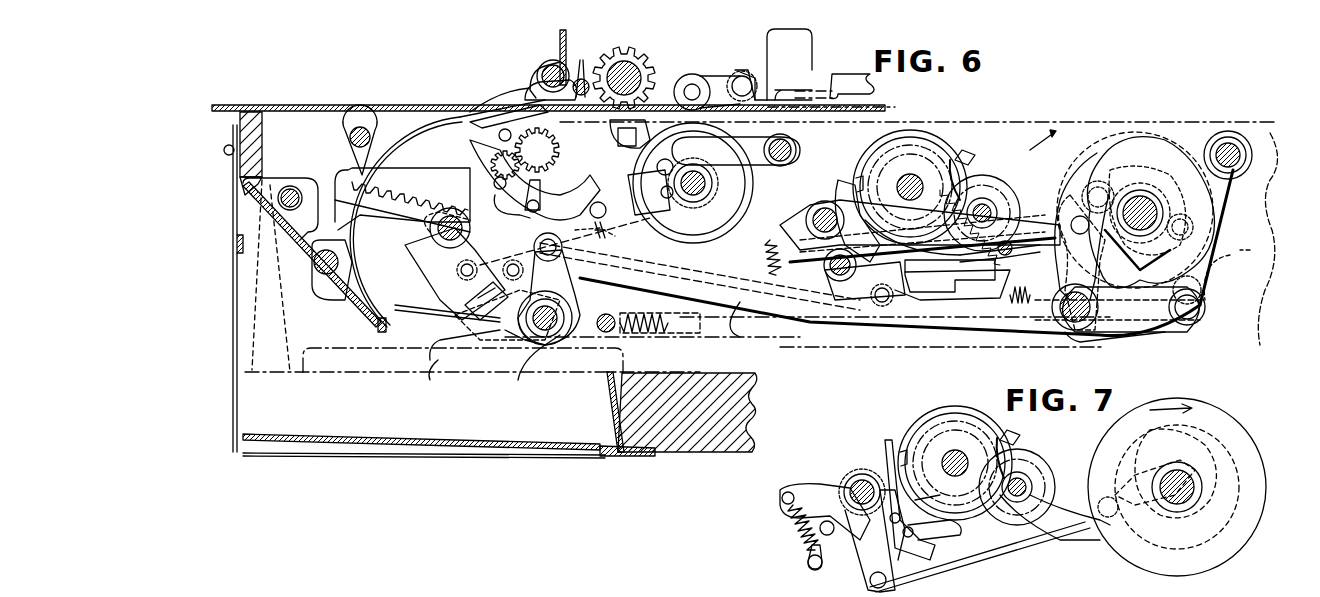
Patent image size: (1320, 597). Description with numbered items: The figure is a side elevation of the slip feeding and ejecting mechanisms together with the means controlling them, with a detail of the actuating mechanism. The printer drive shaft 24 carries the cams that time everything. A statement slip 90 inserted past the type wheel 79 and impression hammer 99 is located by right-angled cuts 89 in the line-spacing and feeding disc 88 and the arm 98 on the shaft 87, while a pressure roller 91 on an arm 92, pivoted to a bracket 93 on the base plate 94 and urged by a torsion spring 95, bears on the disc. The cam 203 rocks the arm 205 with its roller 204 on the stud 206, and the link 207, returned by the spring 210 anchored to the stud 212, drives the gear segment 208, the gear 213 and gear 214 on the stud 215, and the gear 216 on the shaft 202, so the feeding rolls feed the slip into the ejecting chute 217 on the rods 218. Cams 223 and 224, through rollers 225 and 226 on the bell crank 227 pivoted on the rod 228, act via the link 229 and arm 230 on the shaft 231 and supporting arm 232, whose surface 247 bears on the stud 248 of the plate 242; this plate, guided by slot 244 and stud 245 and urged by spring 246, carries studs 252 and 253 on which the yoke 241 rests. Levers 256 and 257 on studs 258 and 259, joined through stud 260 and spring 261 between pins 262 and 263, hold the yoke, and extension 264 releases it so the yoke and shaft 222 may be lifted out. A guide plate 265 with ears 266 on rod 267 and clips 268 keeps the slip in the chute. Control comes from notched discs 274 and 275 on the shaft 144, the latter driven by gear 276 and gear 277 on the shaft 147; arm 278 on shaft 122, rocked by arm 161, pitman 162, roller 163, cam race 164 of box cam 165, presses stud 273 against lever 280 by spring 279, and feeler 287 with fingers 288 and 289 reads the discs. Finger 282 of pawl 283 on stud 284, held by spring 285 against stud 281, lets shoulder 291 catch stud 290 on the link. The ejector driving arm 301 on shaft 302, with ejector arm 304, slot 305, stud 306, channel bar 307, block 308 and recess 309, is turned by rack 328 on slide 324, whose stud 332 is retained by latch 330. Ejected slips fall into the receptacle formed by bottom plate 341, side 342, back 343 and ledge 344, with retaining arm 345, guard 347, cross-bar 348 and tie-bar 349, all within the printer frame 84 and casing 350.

In FIG. 6, the casing 350 is at (290, 105).
In FIG. 6, the cross-bar 348 is at (250, 120).
In FIG. 6, the retaining arm 345 is at (233, 292).
In FIG. 6, the tie-bar 349 is at (244, 250).
In FIG. 6, the side 342 is at (255, 187).
In FIG. 6, the guard 347 is at (258, 210).
In FIG. 6, the bottom plate 341 is at (380, 434).
In FIG. 6, the ledge 344 is at (622, 458).
In FIG. 6, the back 343 is at (608, 398).
In FIG. 6, the base plate 94 is at (750, 392).
In FIG. 6, the bracket 93 is at (800, 42).
In FIG. 6, the torsion spring 95 is at (790, 62).
In FIG. 6, the pressure roller 91 is at (702, 70).
In FIG. 6, the arm 92 is at (728, 80).
In FIG. 6, the statement slip 90 is at (676, 85).
In FIG. 6, the type wheel 79 is at (690, 75).
In FIG. 6, the rod 267 is at (605, 52).
In FIG. 6, the ear 266 is at (575, 58).
In FIG. 6, the shaft 222 is at (560, 52).
In FIG. 6, the clip 268 is at (550, 68).
In FIG. 6, the guide plate 265 is at (535, 60).
In FIG. 6, the shaft 202 is at (535, 86).
In FIG. 6, the yoke 241 is at (535, 85).
In FIG. 6, the gear 216 is at (510, 110).
In FIG. 6, the gear 214 is at (468, 112).
In FIG. 6, the extension 264 is at (468, 105).
In FIG. 6, the ejecting chute 217 is at (398, 140).
In FIG. 6, the rod 218 is at (350, 135).
In FIG. 6, the rack 328 is at (348, 174).
In FIG. 6, the pin 262 is at (475, 178).
In FIG. 6, the gear 213 is at (498, 136).
In FIG. 6, the stud 215 is at (490, 158).
In FIG. 6, the shaft 302 is at (438, 222).
In FIG. 6, the ejector arm 304 is at (400, 262).
In FIG. 6, the stud 306 is at (463, 278).
In FIG. 6, the slot 305 is at (467, 305).
In FIG. 6, the channel bar 307 is at (470, 326).
In FIG. 6, the ejector driving arm 301 is at (420, 314).
In FIG. 6, the gear segment 208 is at (378, 330).
In FIG. 6, the ejecting block 308 is at (433, 355).
In FIG. 6, the recess 309 is at (442, 375).
In FIG. 6, the supporting arm 232 is at (520, 340).
In FIG. 6, the shaft 231 is at (518, 376).
In FIG. 6, the arm 230 is at (580, 302).
In FIG. 6, the plate 242 is at (562, 246).
In FIG. 6, the surface 247 is at (500, 282).
In FIG. 6, the slot 244 is at (535, 195).
In FIG. 6, the stud 245 is at (539, 210).
In FIG. 6, the stud 258 is at (511, 187).
In FIG. 6, the lever 256 is at (512, 204).
In FIG. 6, the stud 252 is at (535, 180).
In FIG. 6, the stud 259 is at (596, 195).
In FIG. 6, the lever 257 is at (614, 219).
In FIG. 6, the stud 260 is at (609, 232).
In FIG. 6, the stud 248 is at (612, 258).
In FIG. 6, the spring 261 is at (623, 134).
In FIG. 6, the spring 246 is at (693, 183).
In FIG. 6, the shaft 87 is at (713, 184).
In FIG. 6, the impression hammer 99 is at (705, 184).
In FIG. 6, the pin 263 is at (653, 192).
In FIG. 6, the stud 253 is at (677, 160).
In FIG. 6, the right-angled cut 89 is at (705, 148).
In FIG. 6, the arm 98 is at (772, 155).
In FIG. 6, the line-spacing and feeding disc 88 is at (798, 152).
In FIG. 6, the shaft 122 is at (822, 206).
In FIG. 7, the shaft 122 is at (862, 478).
In FIG. 6, the lever 280 is at (800, 222).
In FIG. 7, the lever 280 is at (822, 486).
In FIG. 6, the stud 281 is at (922, 262).
In FIG. 7, the stud 281 is at (985, 548).
In FIG. 6, the spring 279 is at (765, 255).
In FIG. 7, the spring 279 is at (795, 520).
In FIG. 6, the finger 288 is at (845, 185).
In FIG. 7, the finger 288 is at (888, 470).
In FIG. 6, the notched disc 274 is at (930, 132).
In FIG. 7, the notched disc 274 is at (925, 412).
In FIG. 6, the shaft 144 is at (906, 178).
In FIG. 7, the shaft 144 is at (949, 452).
In FIG. 6, the finger 282 is at (935, 208).
In FIG. 6, the gear 276 is at (962, 150).
In FIG. 7, the gear 276 is at (1010, 440).
In FIG. 6, the notched disc 275 is at (963, 160).
In FIG. 7, the notched disc 275 is at (1000, 440).
In FIG. 6, the gear 277 is at (986, 185).
In FIG. 7, the gear 277 is at (1040, 465).
In FIG. 6, the shaft 147 is at (992, 210).
In FIG. 7, the shaft 147 is at (1027, 485).
In FIG. 6, the printer frame 84 is at (1020, 122).
In FIG. 6, the link 229 is at (1030, 248).
In FIG. 6, the cam 203 is at (1080, 185).
In FIG. 6, the roller 226 is at (1085, 185).
In FIG. 6, the cam 224 is at (1168, 140).
In FIG. 6, the printer drive shaft 24 is at (1145, 200).
In FIG. 7, the printer drive shaft 24 is at (1188, 500).
In FIG. 6, the cam 223 is at (1205, 228).
In FIG. 6, the stud 206 is at (1235, 140).
In FIG. 6, the arm 205 is at (1240, 190).
In FIG. 6, the roller 204 is at (1252, 250).
In FIG. 6, the roller 225 is at (1205, 292).
In FIG. 6, the rod 228 is at (1090, 298).
In FIG. 6, the link 207 is at (1165, 332).
In FIG. 6, the bell crank 227 is at (1118, 325).
In FIG. 6, the spring 210 is at (668, 333).
In FIG. 6, the stud 212 is at (610, 332).
In FIG. 6, the slide 324 is at (740, 345).
In FIG. 6, the stud 284 is at (838, 280).
In FIG. 6, the stud 332 is at (878, 304).
In FIG. 6, the stud 290 is at (895, 300).
In FIG. 6, the latch 330 is at (930, 303).
In FIG. 6, the shoulder 291 is at (962, 303).
In FIG. 6, the pawl 283 is at (990, 286).
In FIG. 6, the spring 285 is at (1000, 256).
In FIG. 7, the stud 273 is at (818, 530).
In FIG. 7, the arm 278 is at (808, 570).
In FIG. 7, the arm 161 is at (866, 555).
In FIG. 7, the feeler 287 is at (898, 560).
In FIG. 7, the finger 289 is at (935, 540).
In FIG. 7, the pitman 162 is at (1050, 538).
In FIG. 7, the roller 163 is at (1098, 520).
In FIG. 7, the box cam 165 is at (1238, 435).
In FIG. 7, the cam race 164 is at (1198, 428).